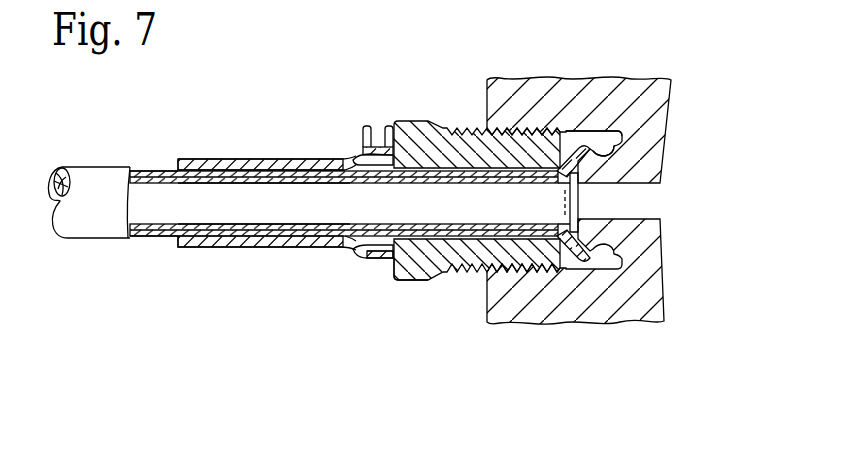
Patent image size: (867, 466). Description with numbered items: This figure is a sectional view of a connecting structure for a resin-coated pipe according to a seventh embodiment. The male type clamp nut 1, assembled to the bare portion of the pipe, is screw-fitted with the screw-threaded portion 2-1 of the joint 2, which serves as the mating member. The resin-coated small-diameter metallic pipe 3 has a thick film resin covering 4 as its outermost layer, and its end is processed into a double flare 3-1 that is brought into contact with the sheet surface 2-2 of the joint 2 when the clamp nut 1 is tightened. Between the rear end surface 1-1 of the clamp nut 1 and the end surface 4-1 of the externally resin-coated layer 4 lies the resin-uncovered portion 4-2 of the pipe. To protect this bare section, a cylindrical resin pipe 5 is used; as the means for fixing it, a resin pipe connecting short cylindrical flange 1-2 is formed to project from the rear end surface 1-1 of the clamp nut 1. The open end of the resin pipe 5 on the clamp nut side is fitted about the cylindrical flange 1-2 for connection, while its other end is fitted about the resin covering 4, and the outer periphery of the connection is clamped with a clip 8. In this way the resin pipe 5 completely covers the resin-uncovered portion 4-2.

The clamp nut 1 is at (416, 126).
The rear end surface of the clamp nut 1-1 is at (385, 262).
The resin pipe connecting short cylindrical flange 1-2 is at (355, 157).
The joint 2 is at (598, 80).
The screw-threaded portion 2-1 is at (604, 124).
The sheet surface 2-2 is at (606, 154).
The resin-coated small-diameter metallic pipe 3 is at (93, 174).
The double flare 3-1 is at (594, 252).
The thick film resin covering 4 is at (146, 170).
The end surface of the externally resin-coated layer 4-1 is at (257, 245).
The resin-uncovered portion 4-2 is at (317, 237).
The resin pipe 5 is at (210, 158).
The clip 8 is at (364, 130).